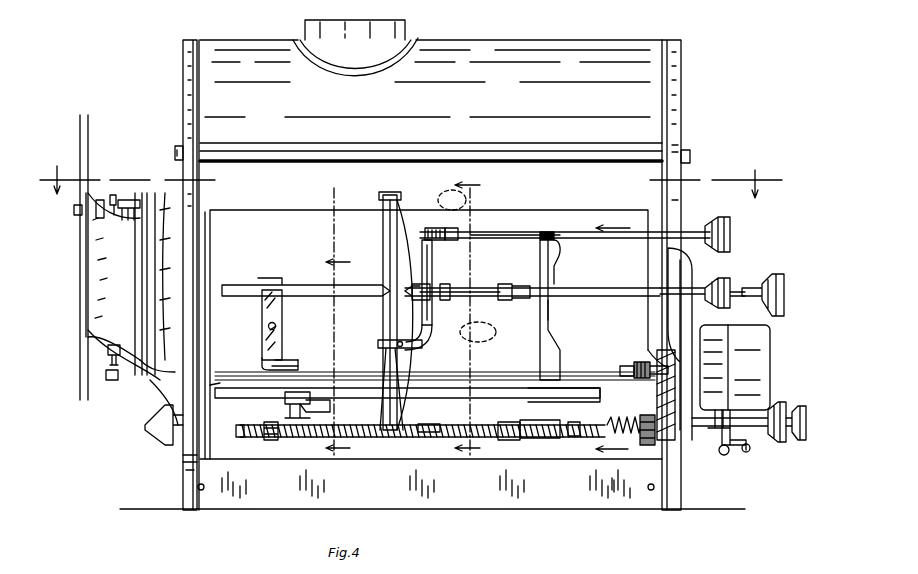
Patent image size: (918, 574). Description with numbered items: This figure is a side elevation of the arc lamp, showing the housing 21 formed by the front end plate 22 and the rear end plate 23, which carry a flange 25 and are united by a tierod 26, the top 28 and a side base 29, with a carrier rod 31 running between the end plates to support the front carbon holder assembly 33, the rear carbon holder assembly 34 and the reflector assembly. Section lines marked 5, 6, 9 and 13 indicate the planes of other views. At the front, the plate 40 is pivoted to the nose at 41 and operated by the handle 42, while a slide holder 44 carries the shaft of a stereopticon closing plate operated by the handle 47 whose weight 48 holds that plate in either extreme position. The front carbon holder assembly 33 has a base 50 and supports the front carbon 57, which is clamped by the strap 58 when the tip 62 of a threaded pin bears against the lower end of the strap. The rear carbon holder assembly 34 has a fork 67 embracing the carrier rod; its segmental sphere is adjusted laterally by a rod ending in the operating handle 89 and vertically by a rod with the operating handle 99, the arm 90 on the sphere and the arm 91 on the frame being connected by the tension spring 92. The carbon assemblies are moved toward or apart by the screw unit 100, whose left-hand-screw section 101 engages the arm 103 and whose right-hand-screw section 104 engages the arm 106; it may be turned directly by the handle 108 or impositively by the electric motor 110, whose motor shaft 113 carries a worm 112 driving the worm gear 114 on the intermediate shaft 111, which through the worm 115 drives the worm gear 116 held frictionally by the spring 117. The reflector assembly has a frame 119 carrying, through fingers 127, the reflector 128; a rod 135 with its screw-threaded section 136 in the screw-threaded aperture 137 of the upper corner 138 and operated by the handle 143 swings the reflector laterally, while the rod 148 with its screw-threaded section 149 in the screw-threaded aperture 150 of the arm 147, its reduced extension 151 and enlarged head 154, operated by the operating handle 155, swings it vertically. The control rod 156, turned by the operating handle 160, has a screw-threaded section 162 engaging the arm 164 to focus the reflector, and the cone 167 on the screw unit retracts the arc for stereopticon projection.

The section line 5- 5 is at (411, 175).
The section line 6- 6 is at (343, 322).
The section line 9- 9 is at (617, 339).
The section line 13- 13 is at (479, 317).
The housing 21 is at (160, 384).
The front end plate 22 is at (185, 104).
The rear end plate 23 is at (682, 115).
The flange 25 is at (212, 242).
The tierod 26 is at (176, 152).
The top 28 is at (222, 44).
The side base 29 is at (432, 489).
The carrier rod 31 is at (488, 372).
The front carbon holder assembly 33 is at (254, 342).
The rear carbon holder assembly 34 is at (563, 343).
The plate 40 is at (80, 298).
The pivot 41 is at (74, 212).
The handle 42 is at (82, 128).
The slide holder 44 is at (128, 198).
The handle 47 is at (108, 358).
The weight 48 is at (114, 214).
The base 50 is at (298, 366).
The front carbon 57 is at (302, 286).
The strap 58 is at (285, 321).
The tip 62 is at (306, 400).
The fork 67 is at (546, 374).
The operating handle 89 is at (776, 276).
The arm 90 is at (560, 262).
The arm 91 is at (538, 263).
The tension spring 92 is at (550, 238).
The operating handle 99 is at (800, 444).
The screw unit 100 is at (428, 434).
The left-hand-screw section 101 is at (268, 440).
The arm 103 is at (409, 440).
The right-hand-screw section 104 is at (514, 441).
The arm 106 is at (286, 397).
The handle 108 is at (740, 454).
The electric motor 110 is at (735, 376).
The intermediate shaft 111 is at (622, 372).
The worm 112 is at (640, 362).
The motor shaft 113 is at (768, 364).
The worm gear 114 is at (624, 366).
The worm 115 is at (640, 418).
The worm gear 116 is at (672, 444).
The spring 117 is at (634, 447).
The frame 119 is at (450, 336).
The fingers 127 is at (386, 194).
The reflector 128 is at (383, 320).
The rod 135 is at (508, 301).
The screw-threaded section 136 is at (442, 300).
The screw-threaded aperture 137 is at (489, 331).
The upper corner 138 is at (438, 291).
The handle 143 is at (728, 284).
The arm 147 is at (434, 257).
The rod 148 is at (565, 226).
The screw-threaded section 149 is at (450, 232).
The screw-threaded aperture 150 is at (452, 200).
The reduced extension 151 is at (428, 230).
The enlarged head 154 is at (400, 239).
The operating handle 155 is at (732, 234).
The control rod 156 is at (252, 433).
The operating handle 160 is at (778, 444).
The screw-threaded section 162 is at (540, 436).
The arm 164 is at (506, 388).
The cone 167 is at (158, 436).